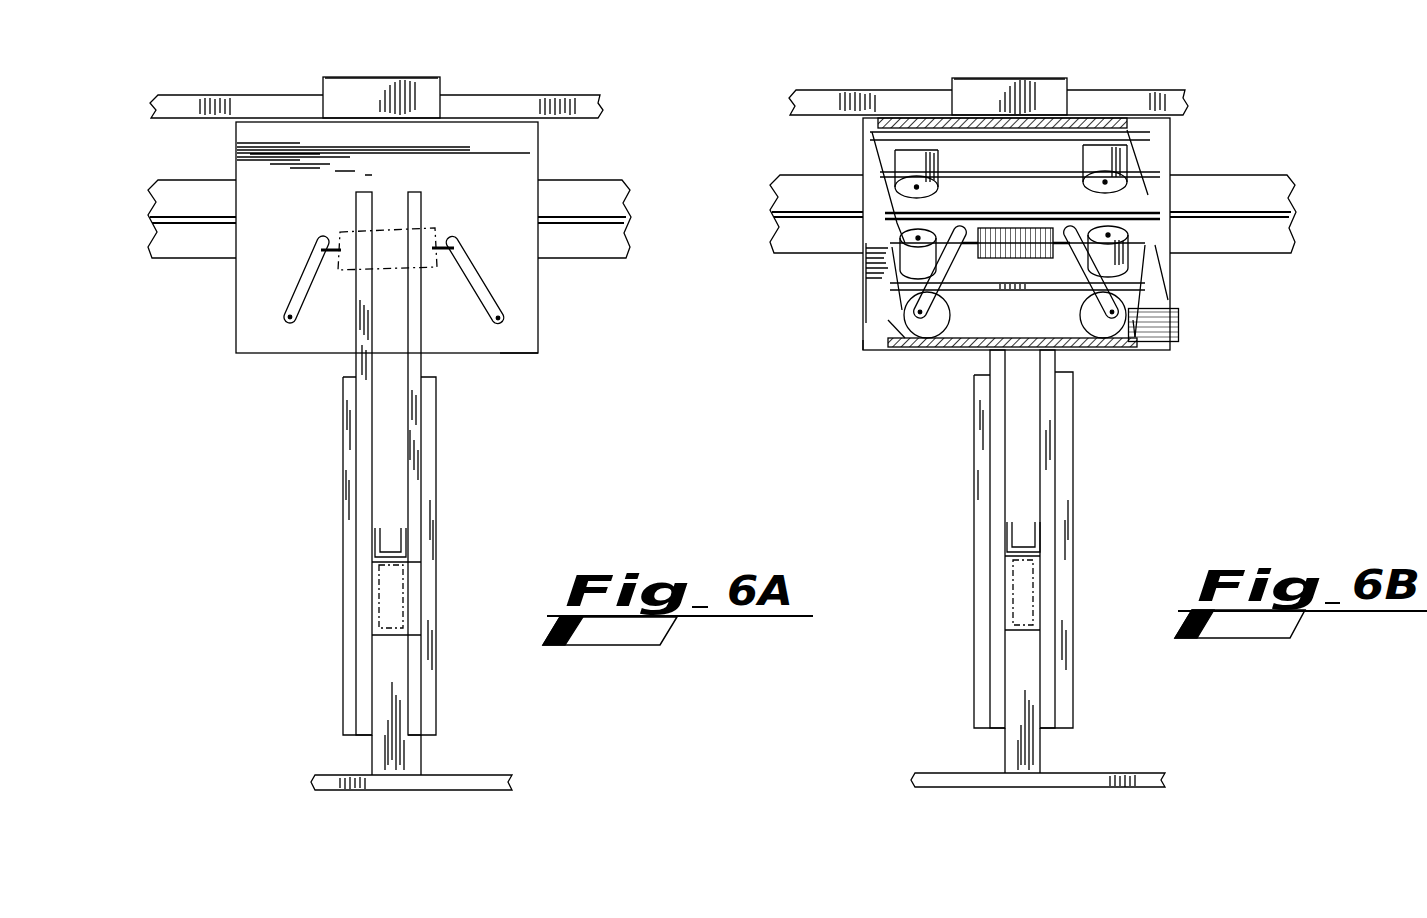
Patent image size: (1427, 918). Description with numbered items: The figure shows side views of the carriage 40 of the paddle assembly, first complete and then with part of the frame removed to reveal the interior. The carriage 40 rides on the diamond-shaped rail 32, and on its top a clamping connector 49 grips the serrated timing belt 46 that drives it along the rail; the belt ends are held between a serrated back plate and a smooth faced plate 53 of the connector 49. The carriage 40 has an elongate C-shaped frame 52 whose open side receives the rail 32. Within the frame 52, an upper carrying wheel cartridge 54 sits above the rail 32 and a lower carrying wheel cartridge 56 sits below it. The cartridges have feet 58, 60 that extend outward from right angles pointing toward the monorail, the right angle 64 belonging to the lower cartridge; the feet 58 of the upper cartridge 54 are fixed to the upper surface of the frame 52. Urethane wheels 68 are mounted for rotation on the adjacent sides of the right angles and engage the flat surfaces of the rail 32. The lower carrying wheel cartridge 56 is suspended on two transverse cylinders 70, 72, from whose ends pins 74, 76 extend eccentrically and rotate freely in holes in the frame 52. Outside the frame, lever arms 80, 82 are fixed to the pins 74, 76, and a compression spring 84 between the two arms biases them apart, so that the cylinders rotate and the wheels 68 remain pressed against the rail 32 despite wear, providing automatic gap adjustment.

In FIG. 6A, the rail 32 is at (607, 188).
In FIG. 6B, the rail 32 is at (1260, 243).
In FIG. 6A, the carriage 40 is at (513, 367).
In FIG. 6B, the carriage 40 is at (815, 340).
In FIG. 6A, the serrated timing belt 46 is at (210, 100).
In FIG. 6B, the serrated timing belt 46 is at (897, 100).
In FIG. 6A, the clamping connector 49 is at (357, 63).
In FIG. 6B, the clamping connector 49 is at (1000, 60).
In FIG. 6A, the frame 52 is at (273, 337).
In FIG. 6A, the smooth faced plate 53 is at (417, 87).
In FIG. 6B, the smooth faced plate 53 is at (1040, 90).
In FIG. 6B, the upper carrying wheel cartridge 54 is at (1073, 150).
In FIG. 6B, the lower carrying wheel cartridge 56 is at (1062, 270).
In FIG. 6B, the feet 58 is at (890, 133).
In FIG. 6B, the feet 60 is at (995, 285).
In FIG. 6B, the right angle 64 is at (1025, 268).
In FIG. 6B, the wheels 68 is at (907, 157).
In FIG. 6B, the cylinder 70 is at (897, 322).
In FIG. 6B, the cylinder 72 is at (1133, 320).
In FIG. 6B, the pin 74 is at (945, 338).
In FIG. 6B, the pin 76 is at (1130, 305).
In FIG. 6A, the lever arm 80 is at (297, 290).
In FIG. 6B, the lever arm 80 is at (912, 283).
In FIG. 6A, the lever arm 82 is at (503, 303).
In FIG. 6B, the lever arm 82 is at (1090, 290).
In FIG. 6A, the compression spring 84 is at (427, 230).
In FIG. 6B, the compression spring 84 is at (980, 227).